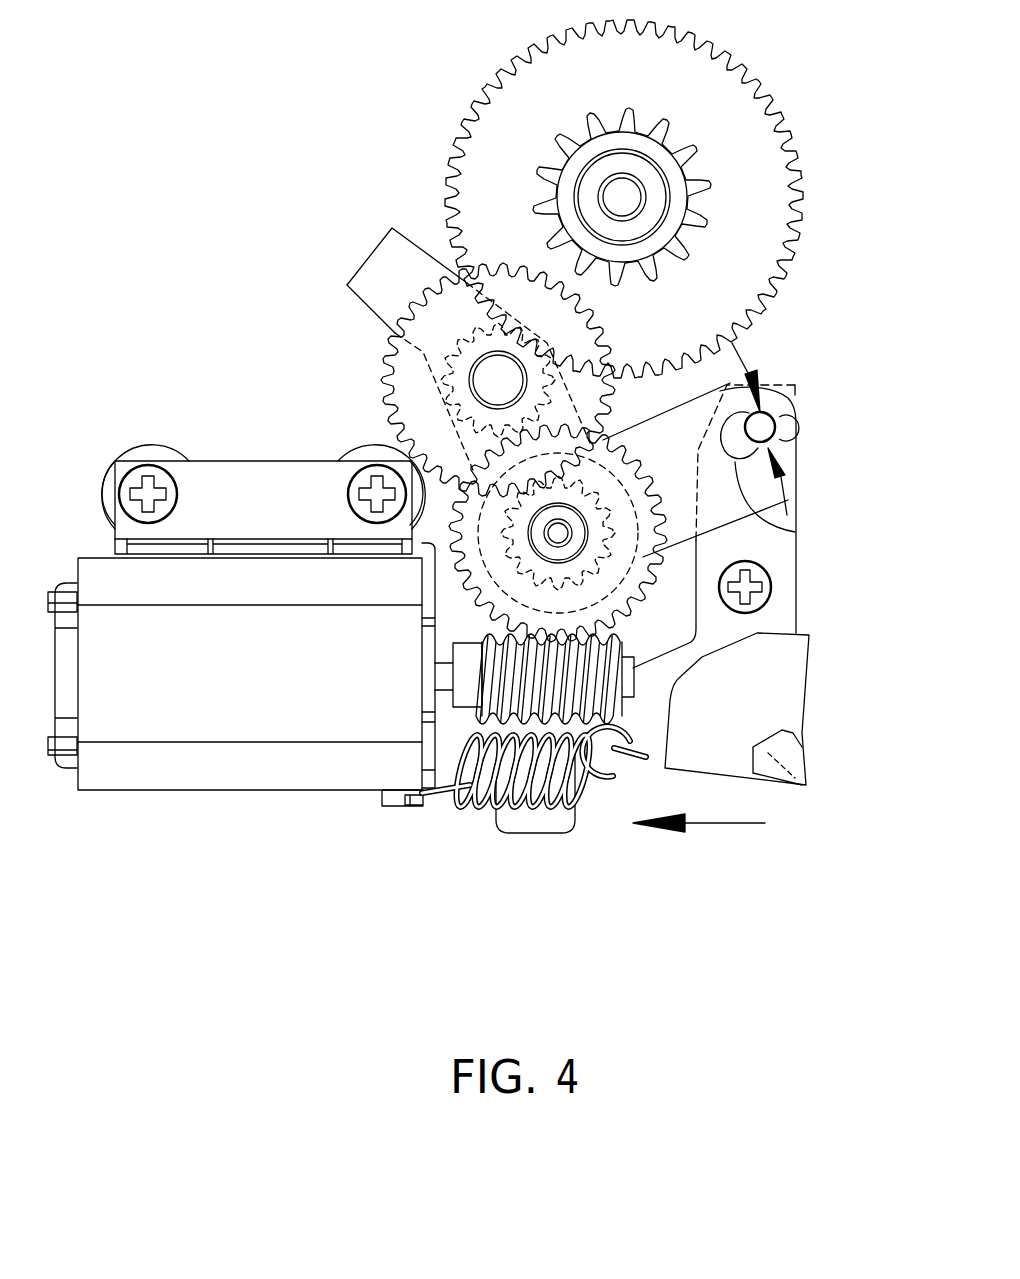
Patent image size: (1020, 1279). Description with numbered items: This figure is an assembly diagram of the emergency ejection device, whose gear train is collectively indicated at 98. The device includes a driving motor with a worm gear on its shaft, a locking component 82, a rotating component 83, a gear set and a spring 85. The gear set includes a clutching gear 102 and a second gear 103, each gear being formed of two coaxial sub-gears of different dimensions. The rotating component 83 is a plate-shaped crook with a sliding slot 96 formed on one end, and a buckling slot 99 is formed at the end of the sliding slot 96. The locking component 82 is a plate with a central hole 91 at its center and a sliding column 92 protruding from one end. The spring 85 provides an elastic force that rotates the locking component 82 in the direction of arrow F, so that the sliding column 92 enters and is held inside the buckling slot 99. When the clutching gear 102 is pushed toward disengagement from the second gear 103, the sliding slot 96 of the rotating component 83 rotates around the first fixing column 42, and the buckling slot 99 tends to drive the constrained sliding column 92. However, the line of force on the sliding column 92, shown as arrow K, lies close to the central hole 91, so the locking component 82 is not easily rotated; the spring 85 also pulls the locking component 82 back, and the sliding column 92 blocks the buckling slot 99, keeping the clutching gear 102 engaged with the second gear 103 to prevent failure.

The transmission assembly 98 is at (883, 72).
The second gear 103 is at (803, 222).
The clutching gear 102 is at (381, 377).
The rotating component 83 is at (364, 256).
The first fixing column 42 is at (548, 538).
The buckling slot 99 is at (798, 424).
The sliding column 92 is at (790, 440).
The sliding slot 96 is at (795, 532).
The central hole 91 is at (771, 586).
The locking component 82 is at (809, 690).
The spring 85 is at (470, 808).
The arrow K is at (759, 377).
The arrow F is at (713, 828).